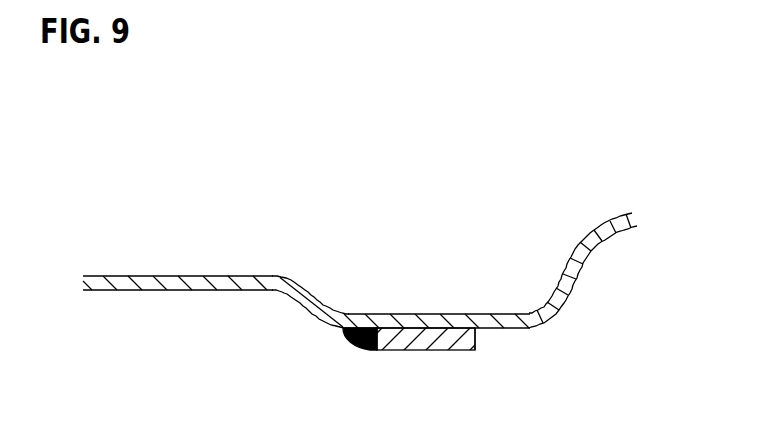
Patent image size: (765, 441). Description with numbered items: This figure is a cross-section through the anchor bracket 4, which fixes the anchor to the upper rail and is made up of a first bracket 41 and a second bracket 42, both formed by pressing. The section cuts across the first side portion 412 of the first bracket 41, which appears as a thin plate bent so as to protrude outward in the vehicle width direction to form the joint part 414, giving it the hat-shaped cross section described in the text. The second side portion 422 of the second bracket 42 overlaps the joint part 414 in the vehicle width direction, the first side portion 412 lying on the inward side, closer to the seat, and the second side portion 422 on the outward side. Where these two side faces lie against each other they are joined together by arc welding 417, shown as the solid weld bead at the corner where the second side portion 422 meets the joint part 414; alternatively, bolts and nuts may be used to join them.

The anchor bracket 4 is at (662, 234).
The first bracket 41 is at (593, 263).
The first side portion 412 is at (160, 275).
The joint part 414 is at (503, 313).
The arc welding 417 is at (355, 349).
The second bracket 42 is at (432, 350).
The second side portion 422 is at (467, 350).